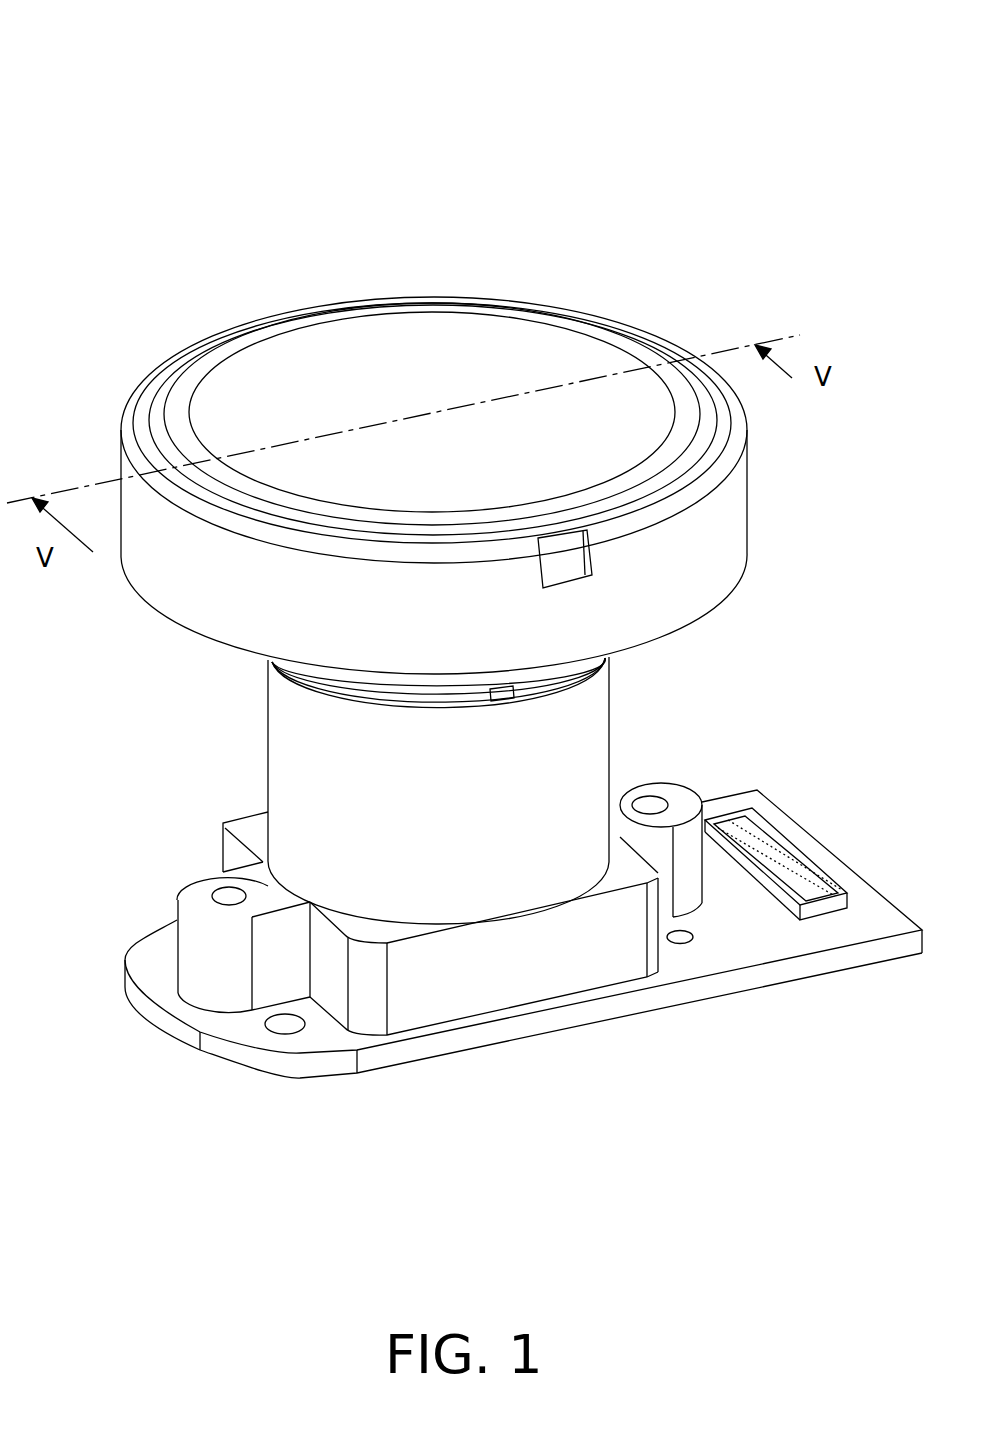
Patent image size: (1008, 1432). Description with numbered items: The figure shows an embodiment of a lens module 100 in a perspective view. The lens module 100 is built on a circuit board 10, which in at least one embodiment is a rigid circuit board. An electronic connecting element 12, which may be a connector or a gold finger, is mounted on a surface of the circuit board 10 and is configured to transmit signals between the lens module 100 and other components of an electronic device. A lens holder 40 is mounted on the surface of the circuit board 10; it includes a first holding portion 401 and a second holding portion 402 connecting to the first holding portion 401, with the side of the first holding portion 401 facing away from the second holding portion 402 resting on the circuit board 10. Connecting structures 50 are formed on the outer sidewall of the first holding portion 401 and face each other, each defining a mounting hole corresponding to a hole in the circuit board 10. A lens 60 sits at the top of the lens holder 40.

The lens module 100 is at (175, 48).
The lens 60 is at (722, 538).
The lens holder 40 is at (448, 925).
The second holding portion 402 is at (497, 870).
The first holding portion 401 is at (567, 967).
The connecting structure 50 is at (682, 803).
The circuit board 10 is at (752, 952).
The electronic connecting element 12 is at (777, 862).